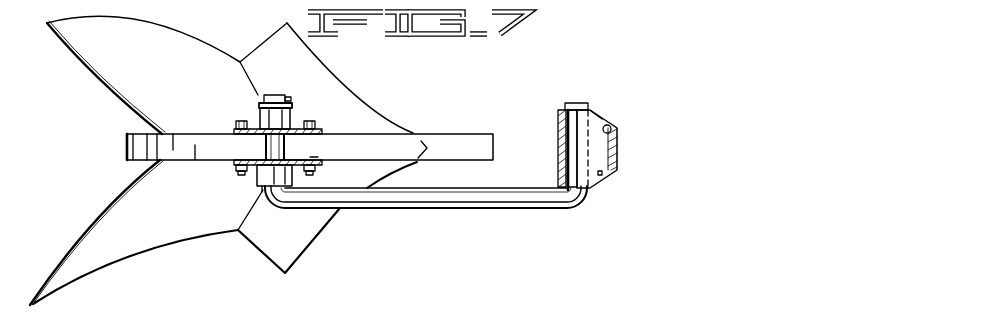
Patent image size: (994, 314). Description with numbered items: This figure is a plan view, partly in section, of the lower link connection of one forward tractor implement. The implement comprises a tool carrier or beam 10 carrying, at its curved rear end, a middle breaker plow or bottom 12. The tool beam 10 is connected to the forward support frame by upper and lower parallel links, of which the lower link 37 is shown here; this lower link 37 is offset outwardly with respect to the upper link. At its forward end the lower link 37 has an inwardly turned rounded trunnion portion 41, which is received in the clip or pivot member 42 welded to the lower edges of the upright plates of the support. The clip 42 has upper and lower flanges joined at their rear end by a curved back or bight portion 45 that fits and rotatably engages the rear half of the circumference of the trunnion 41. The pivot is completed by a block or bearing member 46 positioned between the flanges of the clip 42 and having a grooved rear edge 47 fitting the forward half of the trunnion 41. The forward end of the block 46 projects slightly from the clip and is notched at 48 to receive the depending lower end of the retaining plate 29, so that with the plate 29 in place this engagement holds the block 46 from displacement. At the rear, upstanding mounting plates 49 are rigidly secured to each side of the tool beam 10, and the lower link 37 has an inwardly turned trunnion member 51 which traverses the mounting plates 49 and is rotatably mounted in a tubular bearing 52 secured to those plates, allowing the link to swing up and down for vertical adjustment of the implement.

The tool carrier or beam 10 is at (460, 141).
The middle breaker plow or bottom 12 is at (108, 93).
The retaining plate 29 is at (618, 146).
The lower link 37 is at (471, 208).
The trunnion portion 41 is at (576, 105).
The clip or pivot member 42 is at (555, 175).
The curved back or bight portion 45 is at (559, 155).
The block or bearing member 46 is at (596, 126).
The grooved rear edge 47 is at (602, 174).
The notch 48 is at (611, 129).
The mounting plates 49 is at (310, 157).
The trunnion portion or member 51 is at (258, 196).
The tubular bearing 52 is at (259, 105).